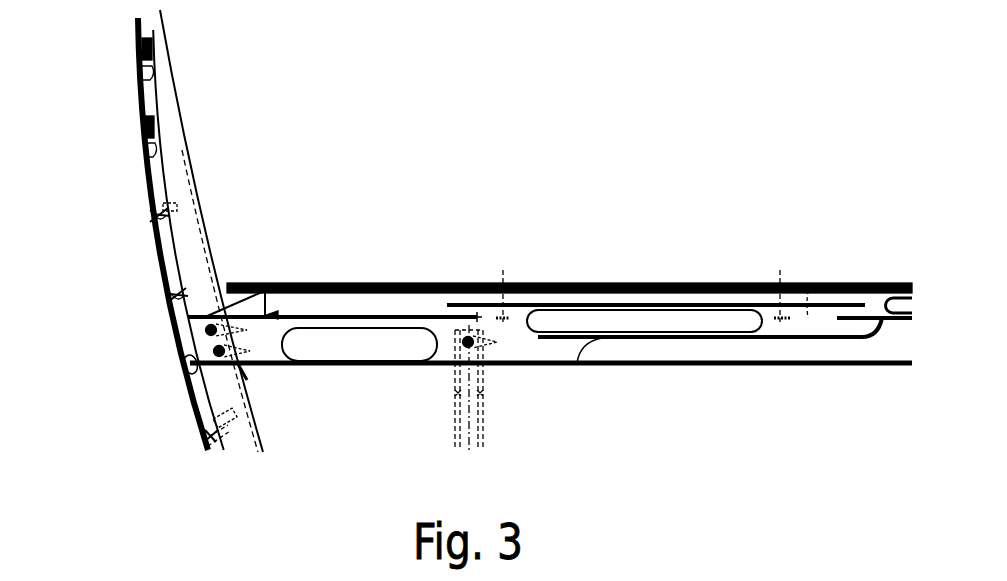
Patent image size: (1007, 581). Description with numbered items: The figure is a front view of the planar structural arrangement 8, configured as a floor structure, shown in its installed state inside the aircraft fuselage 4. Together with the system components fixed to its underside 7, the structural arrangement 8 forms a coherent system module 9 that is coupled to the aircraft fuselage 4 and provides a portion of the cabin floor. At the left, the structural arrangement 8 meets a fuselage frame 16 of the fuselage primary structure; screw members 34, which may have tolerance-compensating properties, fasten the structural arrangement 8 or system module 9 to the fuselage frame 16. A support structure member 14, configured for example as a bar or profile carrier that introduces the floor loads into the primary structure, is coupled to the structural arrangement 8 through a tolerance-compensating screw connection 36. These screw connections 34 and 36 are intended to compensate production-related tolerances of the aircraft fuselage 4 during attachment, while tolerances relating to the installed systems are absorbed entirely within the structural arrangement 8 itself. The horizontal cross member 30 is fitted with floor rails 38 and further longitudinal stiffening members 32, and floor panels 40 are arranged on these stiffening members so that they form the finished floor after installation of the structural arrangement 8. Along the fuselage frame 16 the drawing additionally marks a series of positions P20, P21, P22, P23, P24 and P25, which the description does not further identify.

The aircraft fuselage 4 is at (166, 342).
The underside 7 is at (728, 402).
The planar structural arrangement 8 is at (535, 318).
The system module 9 is at (683, 171).
The support structure member 14 is at (478, 402).
The fuselage frame 16 is at (188, 247).
The cross member 30 is at (808, 318).
The longitudinal stiffening member 32 is at (272, 292).
The screw member 34 is at (240, 370).
The tolerance-compensating screw connection 36 is at (488, 268).
The floor rail 38 is at (526, 318).
The floor panel 40 is at (405, 283).
The attachment point P20 is at (140, 72).
The attachment point P21 is at (136, 147).
The attachment point P22 is at (145, 215).
The attachment point P23 is at (160, 292).
The attachment point P24 is at (178, 364).
The attachment point P25 is at (200, 436).